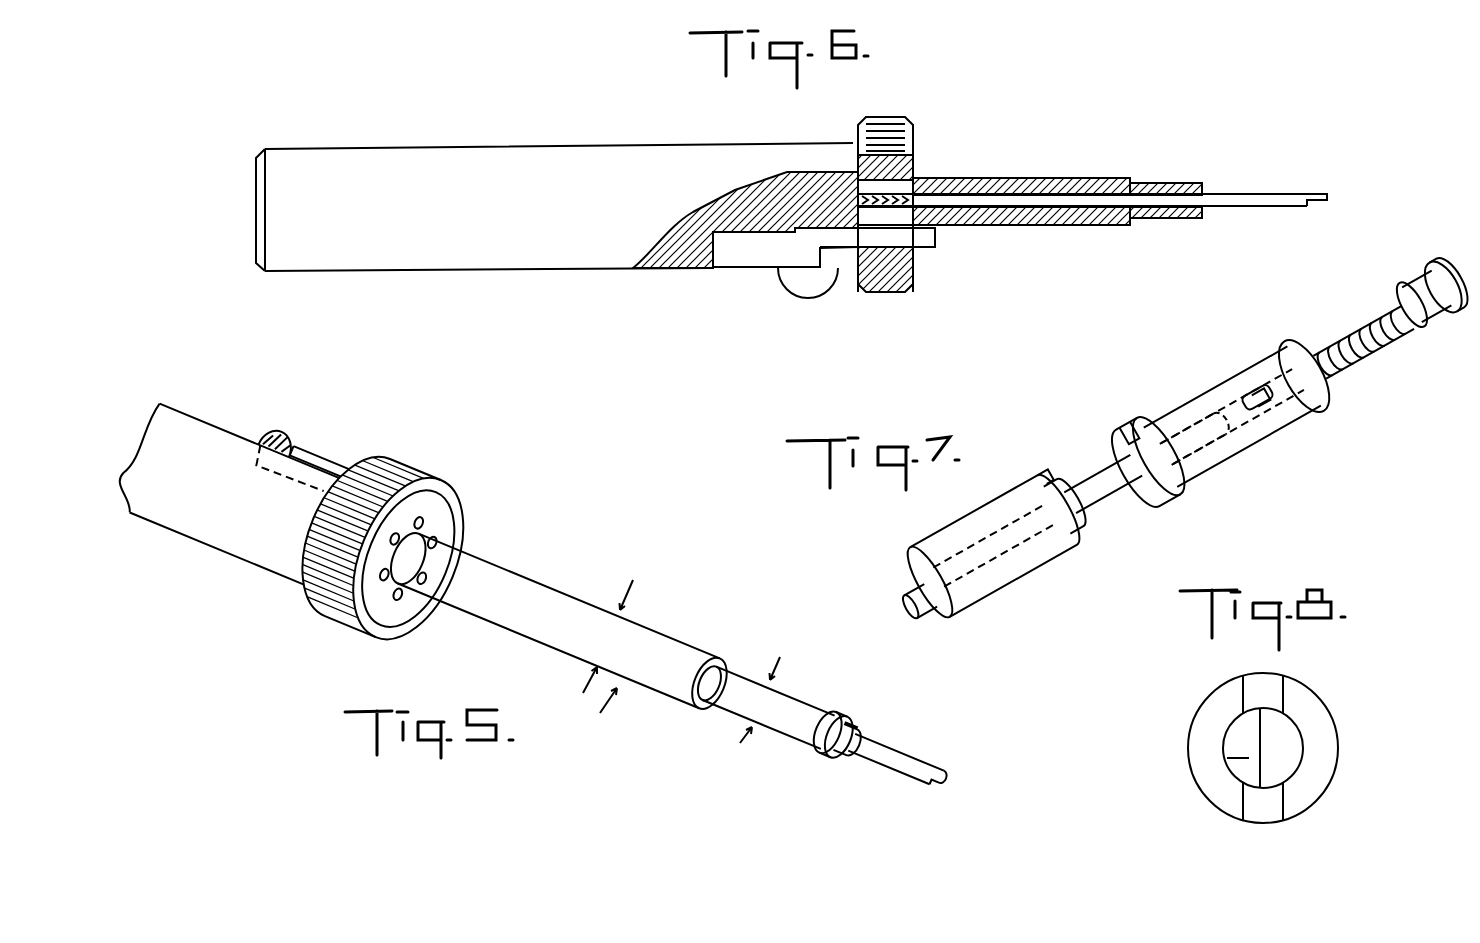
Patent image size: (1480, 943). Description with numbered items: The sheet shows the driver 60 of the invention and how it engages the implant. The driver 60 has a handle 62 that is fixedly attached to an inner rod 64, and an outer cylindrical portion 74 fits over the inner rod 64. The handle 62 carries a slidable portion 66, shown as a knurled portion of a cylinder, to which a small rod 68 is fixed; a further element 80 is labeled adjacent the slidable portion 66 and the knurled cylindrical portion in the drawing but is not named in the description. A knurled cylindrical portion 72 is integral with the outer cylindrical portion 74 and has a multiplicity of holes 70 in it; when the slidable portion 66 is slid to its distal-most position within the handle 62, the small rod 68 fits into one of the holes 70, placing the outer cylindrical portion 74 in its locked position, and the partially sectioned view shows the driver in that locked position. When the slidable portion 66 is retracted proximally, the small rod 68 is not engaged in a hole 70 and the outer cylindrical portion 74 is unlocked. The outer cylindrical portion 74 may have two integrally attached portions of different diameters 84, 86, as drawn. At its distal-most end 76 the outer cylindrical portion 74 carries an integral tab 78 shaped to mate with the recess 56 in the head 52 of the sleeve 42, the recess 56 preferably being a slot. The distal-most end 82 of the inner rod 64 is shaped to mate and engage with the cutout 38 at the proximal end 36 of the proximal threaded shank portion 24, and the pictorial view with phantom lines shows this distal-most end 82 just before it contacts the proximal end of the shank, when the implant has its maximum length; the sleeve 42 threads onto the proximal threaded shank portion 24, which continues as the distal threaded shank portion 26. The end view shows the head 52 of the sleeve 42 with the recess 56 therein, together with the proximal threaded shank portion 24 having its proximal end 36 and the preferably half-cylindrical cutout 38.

In FIG. 7, the proximal threaded shank portion 24 is at (1365, 362).
In FIG. 8, the proximal threaded shank portion 24 is at (1300, 728).
In FIG. 7, the distal threaded shank portion 26 is at (1413, 280).
In FIG. 8, the proximal end 36 is at (1290, 758).
In FIG. 7, the cutout 38 is at (1263, 403).
In FIG. 8, the cutout 38 is at (1240, 747).
In FIG. 7, the sleeve 42 is at (1277, 347).
In FIG. 8, the head 52 is at (1192, 775).
In FIG. 7, the recess 56 is at (1140, 425).
In FIG. 8, the recess 56 is at (1257, 680).
In FIG. 5, the driver 60 is at (597, 716).
In FIG. 6, the handle 62 is at (516, 268).
In FIG. 5, the handle 62 is at (232, 558).
In FIG. 6, the inner rod 64 is at (1278, 193).
In FIG. 5, the inner rod 64 is at (887, 767).
In FIG. 7, the inner rod 64 is at (1200, 450).
In FIG. 6, the slidable portion 66 is at (795, 288).
In FIG. 5, the slidable portion 66 is at (290, 433).
In FIG. 6, the small rod 68 is at (937, 242).
In FIG. 5, the holes 70 is at (388, 597).
In FIG. 6, the knurled cylindrical portion 72 is at (882, 293).
In FIG. 5, the knurled cylindrical portion 72 is at (337, 623).
In FIG. 6, the outer cylindrical portion 74 is at (1078, 178).
In FIG. 5, the outer cylindrical portion 74 is at (537, 580).
In FIG. 5, the distal-most end 76 is at (810, 740).
In FIG. 7, the distal-most end 76 is at (1063, 515).
In FIG. 6, the tab 78 is at (1200, 182).
In FIG. 5, the tab 78 is at (843, 718).
In FIG. 7, the tab 78 is at (1047, 477).
In FIG. 6, the pin 80 is at (845, 142).
In FIG. 5, the pin 80 is at (345, 468).
In FIG. 6, the distal-most end 82 is at (1330, 193).
In FIG. 5, the distal-most end 82 is at (950, 773).
In FIG. 7, the distal-most end 82 is at (1260, 437).
In FIG. 5, the diameter 84 is at (608, 636).
In FIG. 5, the diameter 86 is at (769, 703).